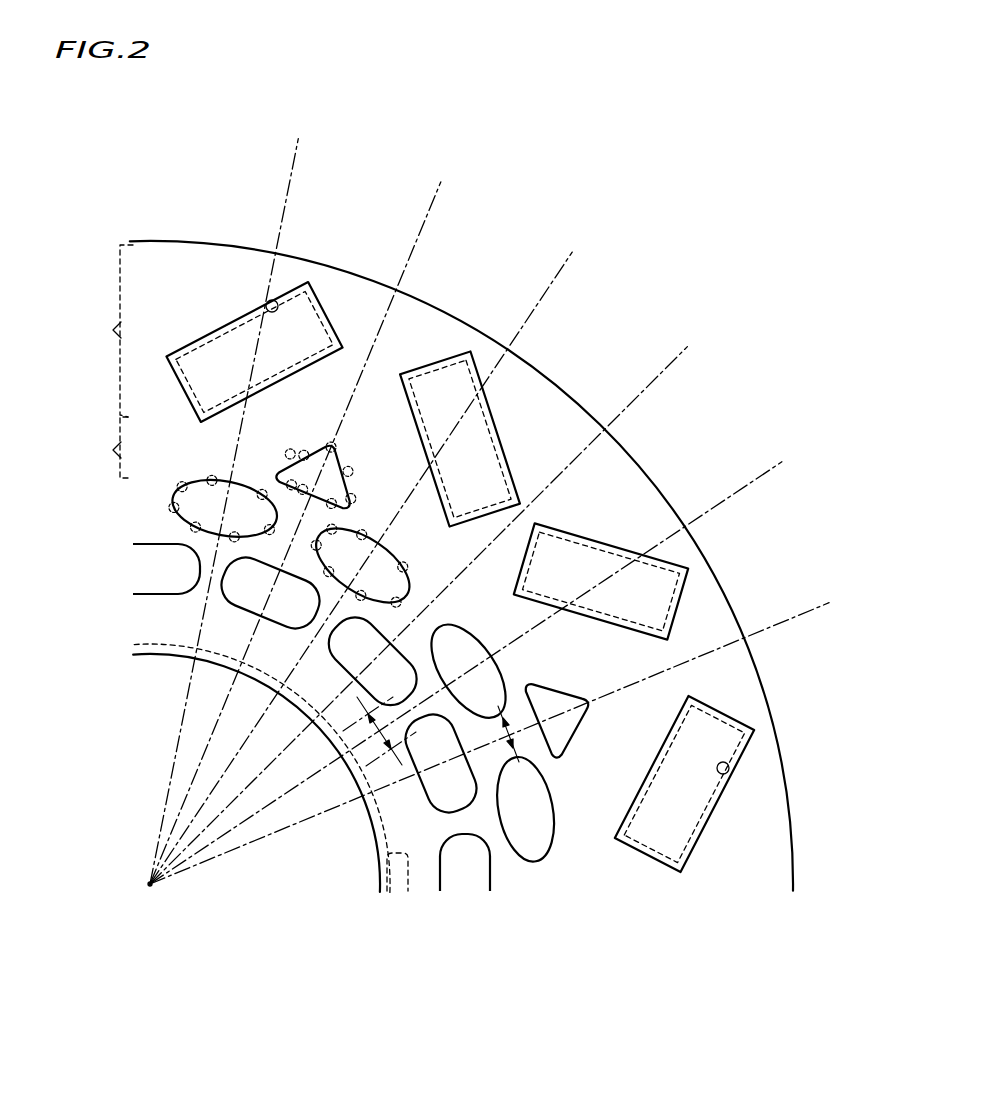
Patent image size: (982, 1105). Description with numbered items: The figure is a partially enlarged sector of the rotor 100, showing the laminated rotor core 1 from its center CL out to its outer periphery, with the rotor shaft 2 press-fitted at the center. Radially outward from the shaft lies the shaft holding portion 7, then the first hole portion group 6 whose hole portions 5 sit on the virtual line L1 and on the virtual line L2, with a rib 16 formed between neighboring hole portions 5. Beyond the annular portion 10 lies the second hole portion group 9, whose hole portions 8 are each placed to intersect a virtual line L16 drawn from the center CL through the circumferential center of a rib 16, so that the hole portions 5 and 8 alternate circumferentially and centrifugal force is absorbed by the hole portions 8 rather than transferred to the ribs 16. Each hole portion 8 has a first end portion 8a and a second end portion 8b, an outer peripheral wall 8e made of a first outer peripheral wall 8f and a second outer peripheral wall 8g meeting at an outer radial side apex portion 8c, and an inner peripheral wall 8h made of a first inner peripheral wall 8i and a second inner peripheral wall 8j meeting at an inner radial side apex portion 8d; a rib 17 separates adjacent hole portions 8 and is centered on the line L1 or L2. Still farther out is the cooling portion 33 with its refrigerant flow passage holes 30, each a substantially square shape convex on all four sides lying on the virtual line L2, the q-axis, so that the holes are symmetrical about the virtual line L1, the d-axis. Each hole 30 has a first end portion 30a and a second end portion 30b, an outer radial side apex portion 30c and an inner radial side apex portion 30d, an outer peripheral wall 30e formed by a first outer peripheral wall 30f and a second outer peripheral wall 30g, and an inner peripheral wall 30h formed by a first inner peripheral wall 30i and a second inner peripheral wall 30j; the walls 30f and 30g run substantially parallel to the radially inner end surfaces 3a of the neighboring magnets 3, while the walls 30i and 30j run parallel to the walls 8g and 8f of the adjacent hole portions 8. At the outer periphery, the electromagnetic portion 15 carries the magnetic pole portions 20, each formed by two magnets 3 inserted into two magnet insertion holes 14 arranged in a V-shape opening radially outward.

The rotor 100 is at (613, 176).
The rotor core 1 is at (793, 840).
The rotor shaft 2 is at (399, 885).
The magnet 3 is at (505, 525).
The radially inner end surface 3a is at (433, 440).
The hole portion 5 is at (420, 782).
The first hole portion group 6 is at (214, 594).
The shaft holding portion 7 is at (140, 630).
The hole portion 8 is at (318, 677).
The first end portion 8a is at (283, 561).
The second end portion 8b is at (414, 591).
The outer radial side apex portion 8c is at (390, 548).
The inner radial side apex portion 8d is at (345, 600).
The outer peripheral wall 8e is at (320, 542).
The first outer peripheral wall 8f is at (392, 600).
The second outer peripheral wall 8g is at (402, 575).
The inner peripheral wall 8h is at (259, 602).
The first inner peripheral wall 8i is at (318, 612).
The second inner peripheral wall 8j is at (345, 640).
The second hole portion group 9 is at (154, 495).
The annular portion 10 is at (138, 523).
The magnet insertion hole 14 is at (729, 770).
The electromagnetic portion 15 is at (110, 331).
The rib 16 is at (405, 712).
The rib 17 is at (519, 710).
The magnetic pole portion 20 is at (565, 425).
The refrigerant flow passage hole 30 is at (428, 537).
The first end portion 30a is at (287, 465).
The second end portion 30b is at (352, 488).
The outer radial side apex portion 30c is at (327, 444).
The inner radial side apex portion 30d is at (315, 500).
The outer peripheral wall 30e is at (317, 425).
The first outer peripheral wall 30f is at (292, 458).
The second outer peripheral wall 30g is at (346, 458).
The inner peripheral wall 30h is at (370, 464).
The first inner peripheral wall 30i is at (314, 434).
The second inner peripheral wall 30j is at (343, 500).
The cooling portion 33 is at (107, 447).
The virtual line L1 is at (439, 603).
The virtual line L2 is at (507, 520).
The virtual line L16 is at (490, 499).
The center CL is at (153, 902).